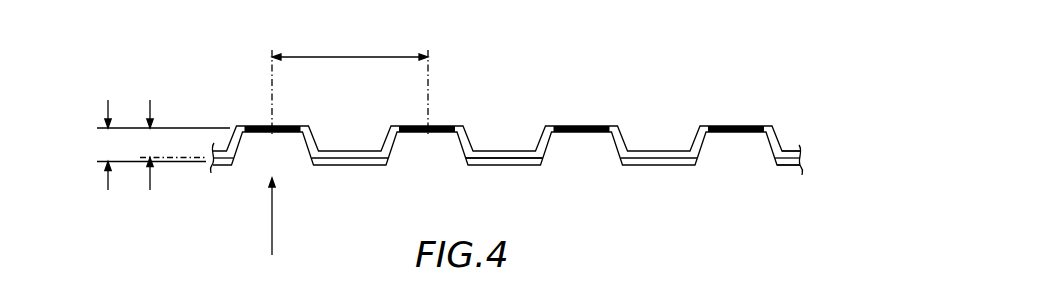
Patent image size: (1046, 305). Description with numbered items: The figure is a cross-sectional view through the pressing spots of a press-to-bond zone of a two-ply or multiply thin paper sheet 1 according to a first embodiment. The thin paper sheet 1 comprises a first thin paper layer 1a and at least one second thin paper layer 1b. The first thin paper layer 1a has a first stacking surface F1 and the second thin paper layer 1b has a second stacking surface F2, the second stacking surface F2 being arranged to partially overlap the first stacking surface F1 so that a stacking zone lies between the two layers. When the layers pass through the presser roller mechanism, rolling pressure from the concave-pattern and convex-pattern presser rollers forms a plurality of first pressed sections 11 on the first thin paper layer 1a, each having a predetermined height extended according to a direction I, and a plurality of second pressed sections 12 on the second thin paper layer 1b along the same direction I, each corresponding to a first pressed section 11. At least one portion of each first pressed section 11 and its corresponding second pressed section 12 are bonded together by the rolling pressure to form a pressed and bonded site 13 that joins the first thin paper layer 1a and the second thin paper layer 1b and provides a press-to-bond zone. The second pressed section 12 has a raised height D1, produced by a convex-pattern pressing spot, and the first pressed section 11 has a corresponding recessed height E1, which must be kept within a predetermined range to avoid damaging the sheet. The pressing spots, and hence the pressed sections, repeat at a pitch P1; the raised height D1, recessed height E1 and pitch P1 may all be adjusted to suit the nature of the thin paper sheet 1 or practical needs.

The thin paper sheet 1 is at (539, 149).
The first thin paper layer 1a is at (793, 132).
The second thin paper layer 1b is at (790, 185).
The first pressed section 11 is at (478, 122).
The second pressed section 12 is at (444, 158).
The pressed and bonded site 13 is at (577, 125).
The first stacking surface F1 is at (680, 151).
The second stacking surface F2 is at (638, 158).
The pitch P1 is at (355, 56).
The raised height D1 is at (108, 148).
The recessed height E1 is at (150, 146).
The direction I is at (273, 218).